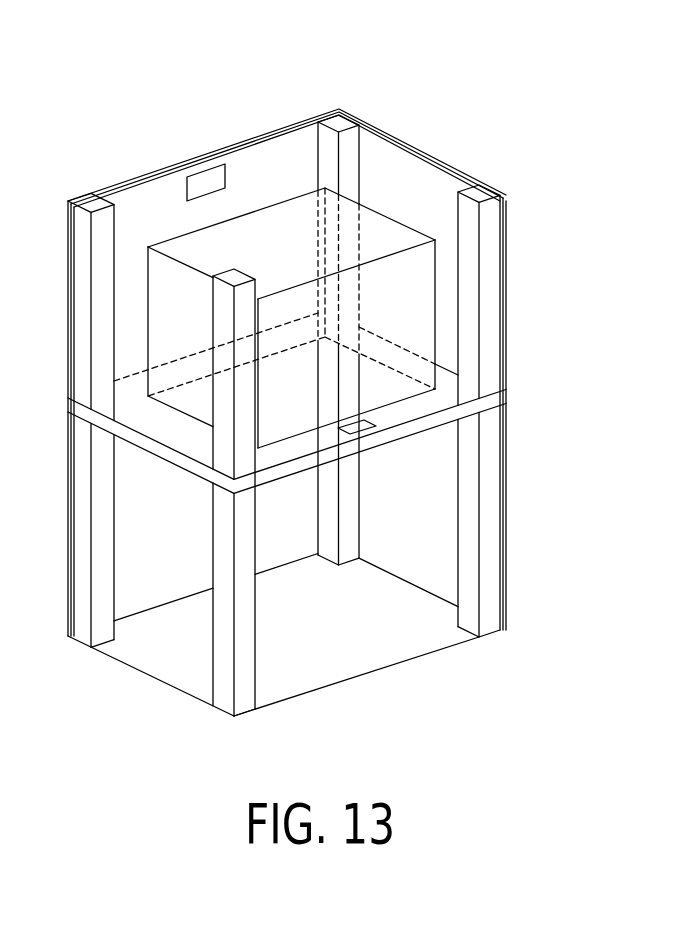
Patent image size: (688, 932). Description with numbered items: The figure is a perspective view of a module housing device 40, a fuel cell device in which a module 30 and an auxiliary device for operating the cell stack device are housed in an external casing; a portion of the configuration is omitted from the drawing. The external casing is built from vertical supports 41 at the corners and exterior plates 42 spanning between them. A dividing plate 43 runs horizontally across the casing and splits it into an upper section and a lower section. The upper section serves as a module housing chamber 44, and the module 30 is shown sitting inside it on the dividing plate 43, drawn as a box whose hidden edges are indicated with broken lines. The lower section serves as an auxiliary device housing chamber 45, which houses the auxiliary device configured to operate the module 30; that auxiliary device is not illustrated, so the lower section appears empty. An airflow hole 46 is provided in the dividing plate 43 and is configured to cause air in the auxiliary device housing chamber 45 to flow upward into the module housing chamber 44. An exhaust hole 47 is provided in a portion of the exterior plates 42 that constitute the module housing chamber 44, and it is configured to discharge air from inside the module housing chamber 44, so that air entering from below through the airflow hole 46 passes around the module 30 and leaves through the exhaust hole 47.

The module 30 is at (385, 230).
The module housing device 40 is at (237, 65).
The support 41 is at (95, 199).
The exterior plate 42 is at (377, 128).
The dividing plate 43 is at (493, 399).
The module housing chamber 44 is at (395, 175).
The auxiliary device housing chamber 45 is at (150, 533).
The airflow hole 46 is at (376, 426).
The exhaust hole 47 is at (201, 178).